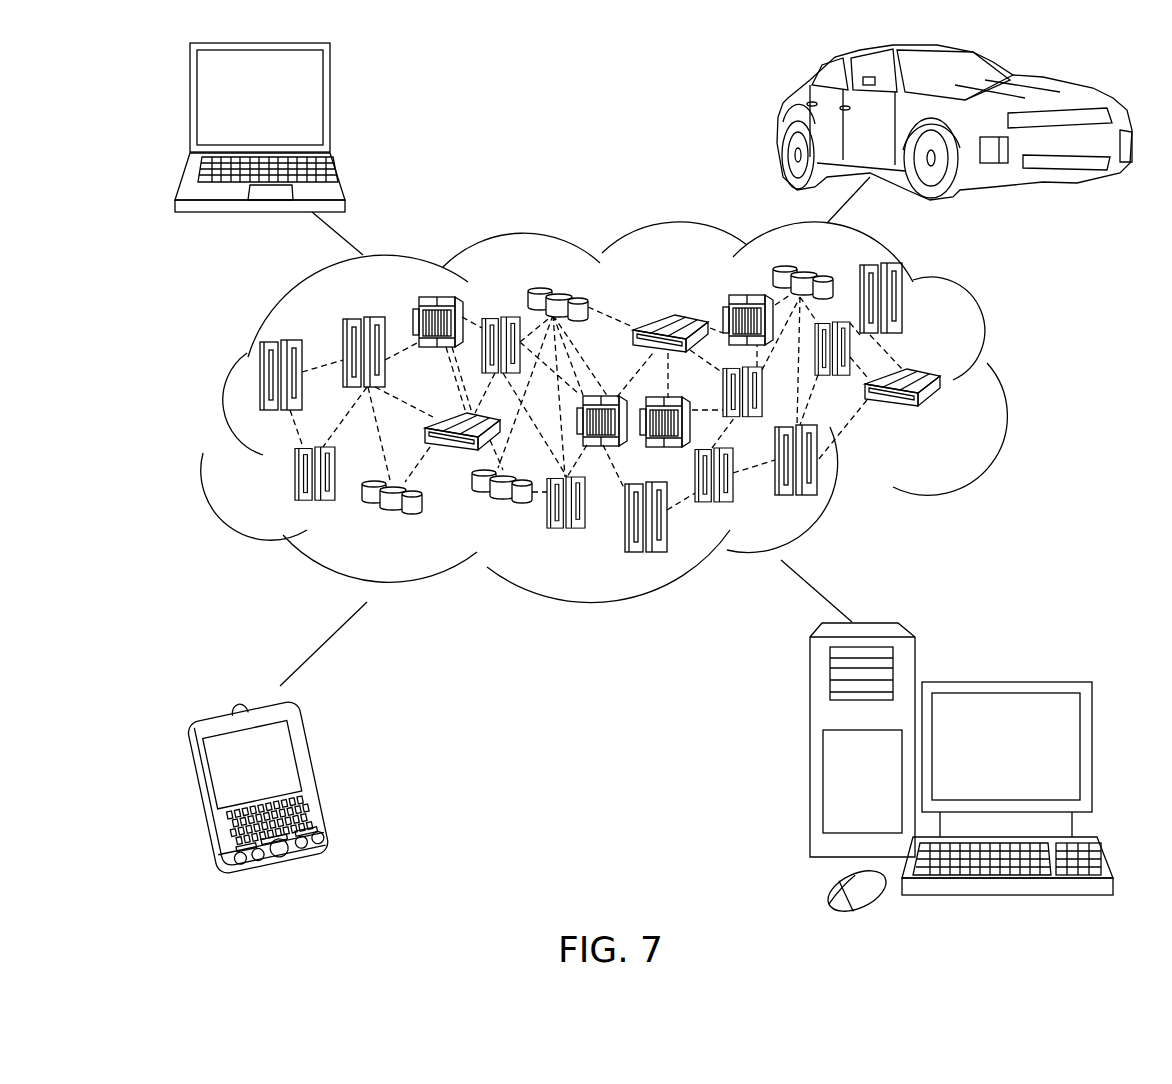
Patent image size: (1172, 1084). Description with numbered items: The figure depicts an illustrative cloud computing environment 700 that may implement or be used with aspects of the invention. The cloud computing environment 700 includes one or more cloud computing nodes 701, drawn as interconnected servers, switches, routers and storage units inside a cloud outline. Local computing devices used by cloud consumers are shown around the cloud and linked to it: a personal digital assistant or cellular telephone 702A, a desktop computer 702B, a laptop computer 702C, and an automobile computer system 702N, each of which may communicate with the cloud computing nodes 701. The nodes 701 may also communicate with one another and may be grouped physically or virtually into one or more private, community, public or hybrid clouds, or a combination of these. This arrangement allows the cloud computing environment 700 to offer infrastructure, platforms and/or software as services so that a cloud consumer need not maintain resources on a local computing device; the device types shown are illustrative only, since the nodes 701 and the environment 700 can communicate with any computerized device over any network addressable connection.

The cloud computing environment 700 is at (1000, 386).
The cloud computing nodes 701 is at (956, 421).
The personal digital assistant (PDA) or cellular telephone 702A is at (322, 778).
The desktop computer 702B is at (1003, 680).
The laptop computer 702C is at (332, 107).
The automobile computer system 702N is at (780, 118).